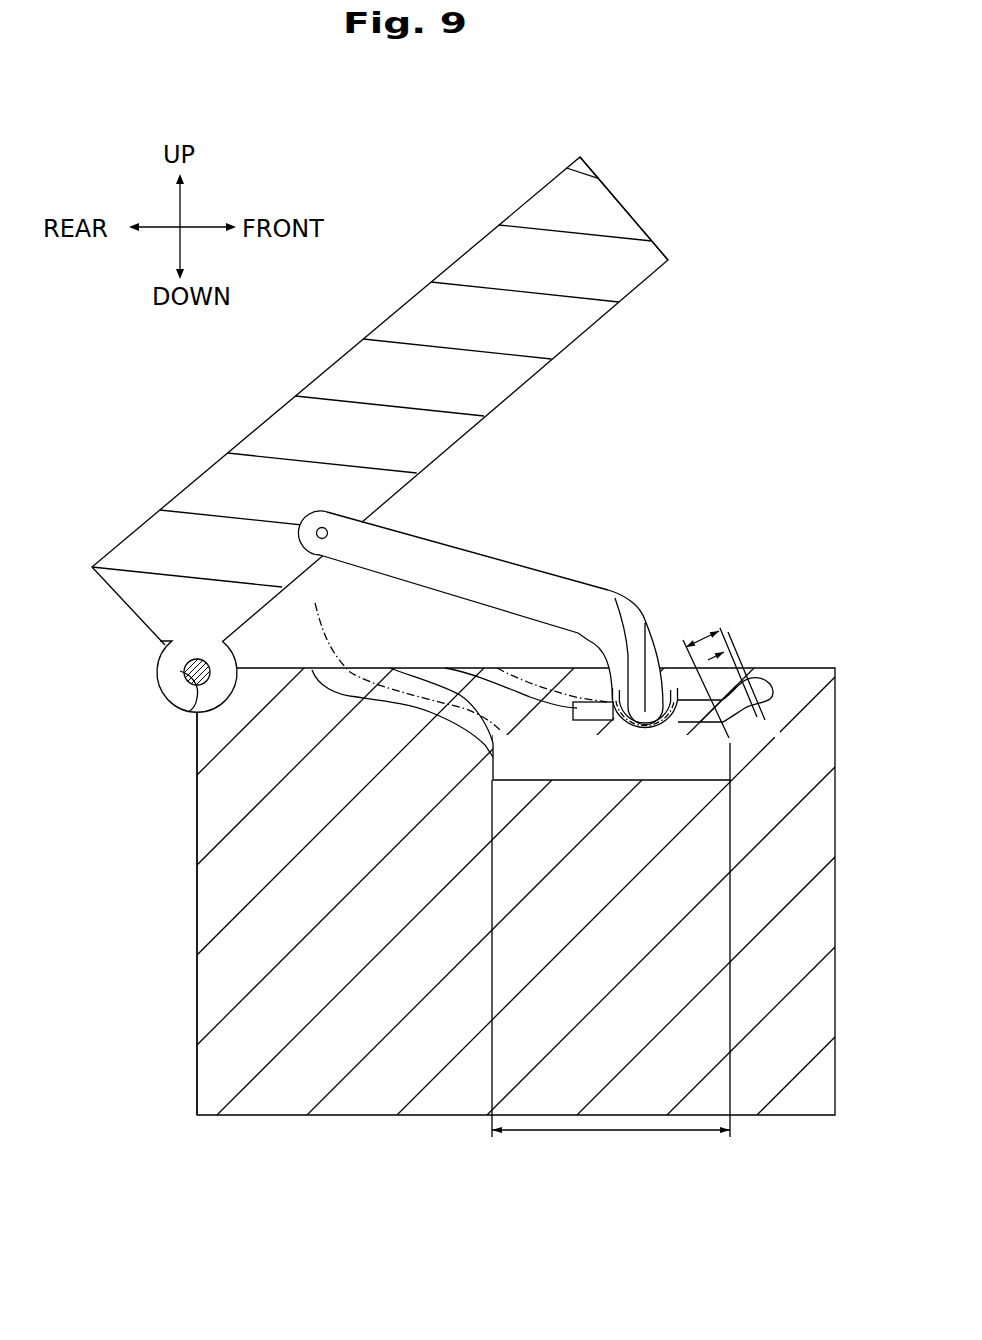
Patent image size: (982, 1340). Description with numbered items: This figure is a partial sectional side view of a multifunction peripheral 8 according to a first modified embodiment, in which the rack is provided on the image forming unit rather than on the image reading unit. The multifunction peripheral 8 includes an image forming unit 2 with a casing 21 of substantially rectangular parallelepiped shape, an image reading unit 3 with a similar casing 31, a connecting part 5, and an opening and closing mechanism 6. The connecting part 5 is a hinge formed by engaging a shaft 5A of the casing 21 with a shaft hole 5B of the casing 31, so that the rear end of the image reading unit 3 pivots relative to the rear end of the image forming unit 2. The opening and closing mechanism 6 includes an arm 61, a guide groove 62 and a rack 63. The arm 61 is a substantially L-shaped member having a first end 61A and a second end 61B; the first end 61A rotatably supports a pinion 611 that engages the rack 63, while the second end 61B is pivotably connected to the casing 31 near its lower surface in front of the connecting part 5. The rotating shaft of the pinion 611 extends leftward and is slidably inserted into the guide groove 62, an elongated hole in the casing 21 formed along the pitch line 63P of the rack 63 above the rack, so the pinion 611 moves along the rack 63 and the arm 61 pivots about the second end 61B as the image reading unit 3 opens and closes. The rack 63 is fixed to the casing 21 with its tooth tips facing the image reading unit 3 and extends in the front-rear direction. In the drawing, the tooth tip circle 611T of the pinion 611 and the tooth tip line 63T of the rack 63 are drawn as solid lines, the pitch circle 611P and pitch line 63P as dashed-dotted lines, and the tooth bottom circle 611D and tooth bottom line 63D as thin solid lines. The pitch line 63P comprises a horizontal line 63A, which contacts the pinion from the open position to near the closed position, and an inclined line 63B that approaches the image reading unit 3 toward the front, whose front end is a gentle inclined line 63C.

The image forming unit 2 is at (491, 891).
The casing 21 is at (197, 962).
The image reading unit 3 is at (380, 401).
The casing 31 is at (194, 480).
The connecting part 5 is at (163, 720).
The shaft 5A is at (185, 670).
The shaft hole 5B is at (190, 713).
The opening and closing mechanism 6 is at (512, 591).
The arm 61 is at (480, 605).
The first end 61A is at (615, 598).
The second end 61B is at (338, 540).
The pinion 611 is at (678, 692).
The tooth bottom circle 611D is at (445, 668).
The pitch circle 611P is at (497, 667).
The tooth tip circle 611T is at (598, 697).
The guide groove 62 is at (762, 680).
The rack 63 is at (582, 874).
The horizontal line 63A is at (611, 976).
The inclined line 63B is at (714, 669).
The gentle inclined line 63C is at (733, 647).
The tooth bottom line 63D is at (312, 670).
The pitch line 63P is at (397, 653).
The tooth tip line 63T is at (390, 668).
The multifunction peripheral 8 is at (348, 202).